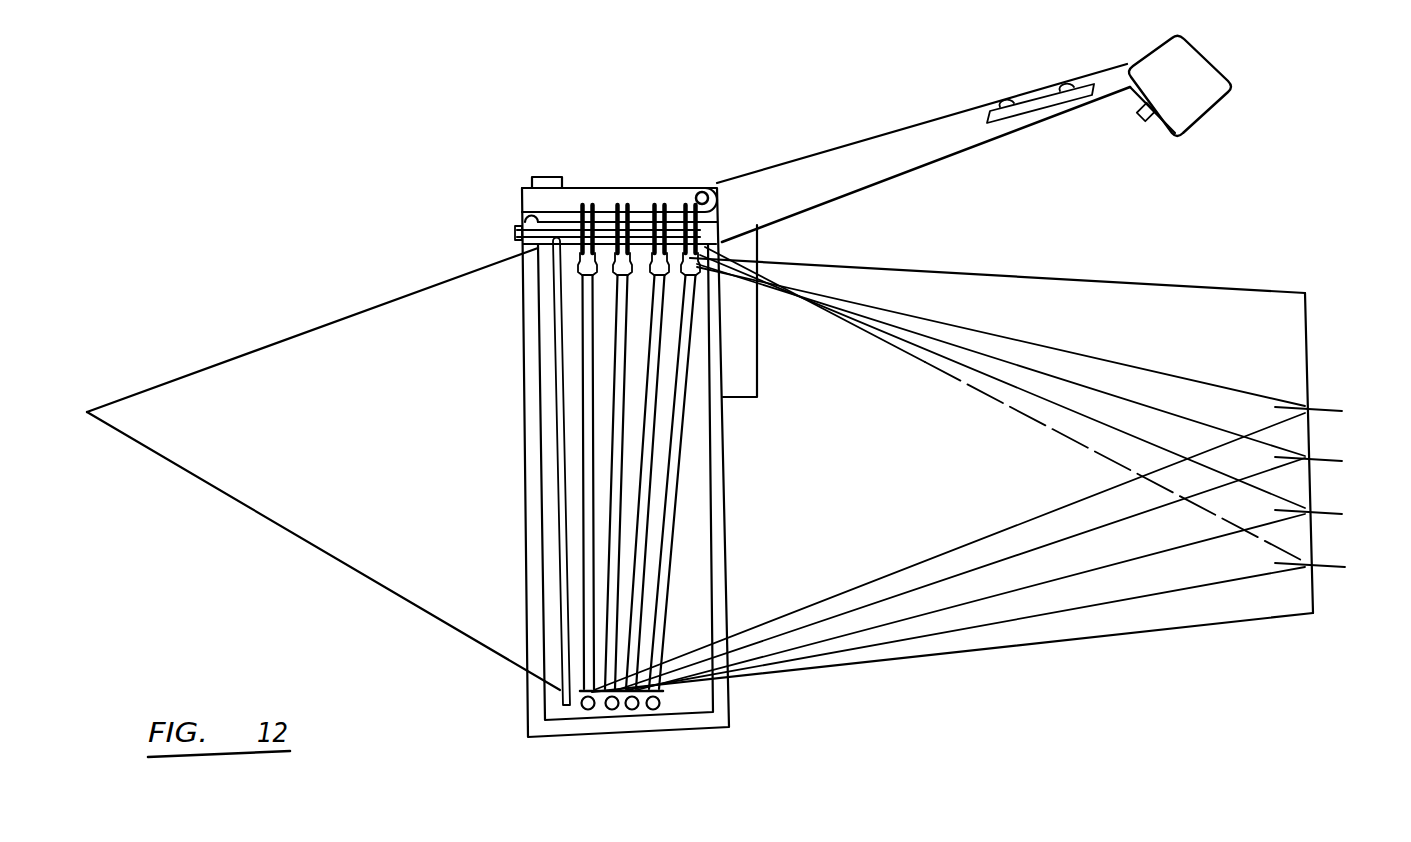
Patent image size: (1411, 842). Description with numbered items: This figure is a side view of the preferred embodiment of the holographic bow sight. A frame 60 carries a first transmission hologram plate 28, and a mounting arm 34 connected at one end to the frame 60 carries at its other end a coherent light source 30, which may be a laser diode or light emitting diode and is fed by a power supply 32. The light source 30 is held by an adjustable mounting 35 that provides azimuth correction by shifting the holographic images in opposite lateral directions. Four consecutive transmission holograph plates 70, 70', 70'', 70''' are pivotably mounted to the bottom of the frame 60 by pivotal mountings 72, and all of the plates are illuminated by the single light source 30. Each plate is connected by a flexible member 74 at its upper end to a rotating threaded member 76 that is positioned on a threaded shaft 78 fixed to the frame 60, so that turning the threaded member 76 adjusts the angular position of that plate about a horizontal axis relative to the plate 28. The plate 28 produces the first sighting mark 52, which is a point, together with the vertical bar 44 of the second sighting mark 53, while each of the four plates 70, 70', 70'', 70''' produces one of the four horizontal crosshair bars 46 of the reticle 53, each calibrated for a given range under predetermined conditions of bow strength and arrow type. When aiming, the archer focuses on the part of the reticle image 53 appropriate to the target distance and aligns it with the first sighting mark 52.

The transmission hologram plate 28 is at (558, 557).
The coherent light source 30 is at (1173, 83).
The power supply 32 is at (747, 383).
The mounting arm 34 is at (847, 160).
The adjustable mounting 35 is at (1062, 50).
The vertical bar image 44 is at (1308, 350).
The horizontal crosshair bars 46 is at (1337, 458).
The first sighting mark 52 is at (87, 413).
The second sighting mark 53 is at (1342, 487).
The frame 60 is at (520, 195).
The hologram plate 70 is at (739, 482).
The hologram plate 70' is at (732, 482).
The hologram plate 70'' is at (725, 482).
The hologram plate 70''' is at (716, 483).
The pivotal mounting 72 is at (657, 709).
The flexible member 74 is at (575, 257).
The threaded member 76 is at (726, 215).
The threaded shaft 78 is at (518, 214).